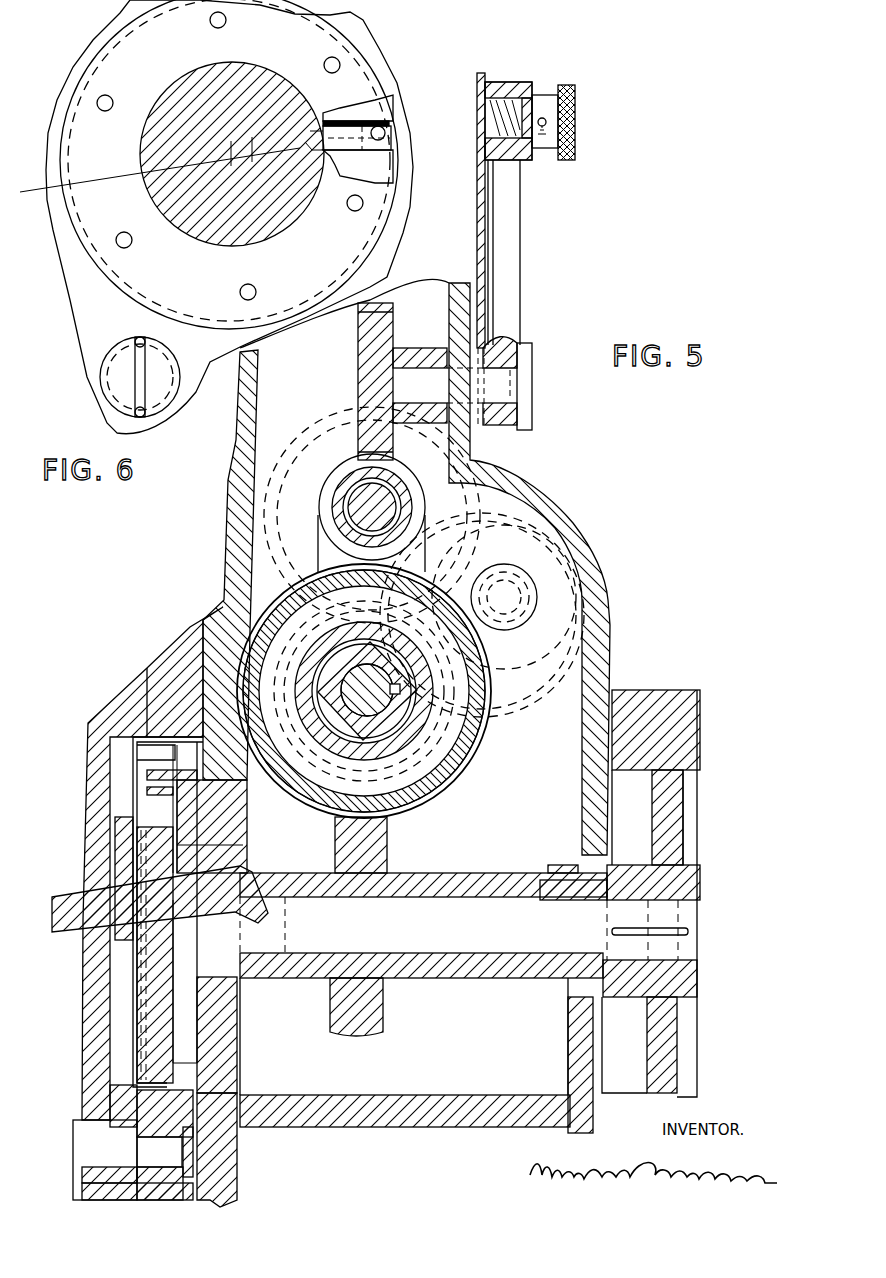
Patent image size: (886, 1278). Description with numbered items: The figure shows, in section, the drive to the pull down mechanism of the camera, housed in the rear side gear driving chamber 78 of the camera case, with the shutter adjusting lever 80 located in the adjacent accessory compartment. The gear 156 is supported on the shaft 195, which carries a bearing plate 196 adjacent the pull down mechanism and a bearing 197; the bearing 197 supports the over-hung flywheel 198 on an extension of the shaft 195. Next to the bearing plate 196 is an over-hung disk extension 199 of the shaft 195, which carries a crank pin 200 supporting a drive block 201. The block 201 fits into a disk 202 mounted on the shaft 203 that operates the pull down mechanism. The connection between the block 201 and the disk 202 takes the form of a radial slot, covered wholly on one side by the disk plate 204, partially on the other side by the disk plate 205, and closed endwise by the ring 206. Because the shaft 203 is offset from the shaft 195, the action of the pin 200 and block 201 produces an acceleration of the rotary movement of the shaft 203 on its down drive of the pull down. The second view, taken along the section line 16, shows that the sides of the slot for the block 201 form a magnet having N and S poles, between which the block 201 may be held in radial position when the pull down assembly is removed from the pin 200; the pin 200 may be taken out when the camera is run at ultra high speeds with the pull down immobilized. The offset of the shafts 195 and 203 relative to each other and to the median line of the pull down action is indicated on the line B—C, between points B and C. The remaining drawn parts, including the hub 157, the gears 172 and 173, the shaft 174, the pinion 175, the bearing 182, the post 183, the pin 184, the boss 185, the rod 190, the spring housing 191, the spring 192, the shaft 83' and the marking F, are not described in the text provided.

In FIG. 5, the section line 16 is at (124, 740).
In FIG. 5, the gear driving chamber 78 is at (560, 673).
In FIG. 5, the shutter adjusting lever 80 is at (527, 256).
In FIG. 5, the shaft 83' is at (432, 691).
In FIG. 5, the gear 156 is at (367, 840).
In FIG. 5, the hub 157 is at (388, 730).
In FIG. 5, the gear 172 is at (515, 528).
In FIG. 5, the gear 173 is at (318, 457).
In FIG. 5, the shaft 174 is at (345, 522).
In FIG. 5, the pinion 175 is at (538, 555).
In FIG. 5, the bearing 182 is at (372, 507).
In FIG. 5, the post 183 is at (363, 342).
In FIG. 5, the pin 184 is at (500, 390).
In FIG. 5, the boss 185 is at (330, 563).
In FIG. 5, the rod 190 is at (508, 222).
In FIG. 5, the spring housing 191 is at (523, 88).
In FIG. 5, the spring 192 is at (481, 195).
In FIG. 5, the shaft 195 is at (418, 908).
In FIG. 5, the bearing plate 196 is at (228, 824).
In FIG. 5, the bearing 197 is at (560, 867).
In FIG. 5, the flywheel 198 is at (655, 700).
In FIG. 5, the disk extension 199 is at (190, 842).
In FIG. 6, the crank pin 200 is at (388, 121).
In FIG. 5, the crank pin 200 is at (150, 785).
In FIG. 6, the drive block 201 is at (392, 139).
In FIG. 5, the drive block 201 is at (147, 808).
In FIG. 6, the disk 202 is at (380, 110).
In FIG. 5, the disk 202 is at (127, 808).
In FIG. 5, the shaft 203 is at (70, 903).
In FIG. 5, the disk plate 204 is at (132, 1036).
In FIG. 5, the disk plate 205 is at (160, 973).
In FIG. 6, the ring 206 is at (394, 170).
In FIG. 5, the ring 206 is at (150, 745).
In FIG. 6, the line B—C B is at (157, 181).
In FIG. 6, the line B— C is at (395, 129).
In FIG. 6, the field line F is at (314, 133).
In FIG. 6, the N pole N is at (367, 109).
In FIG. 6, the S pole S is at (372, 163).